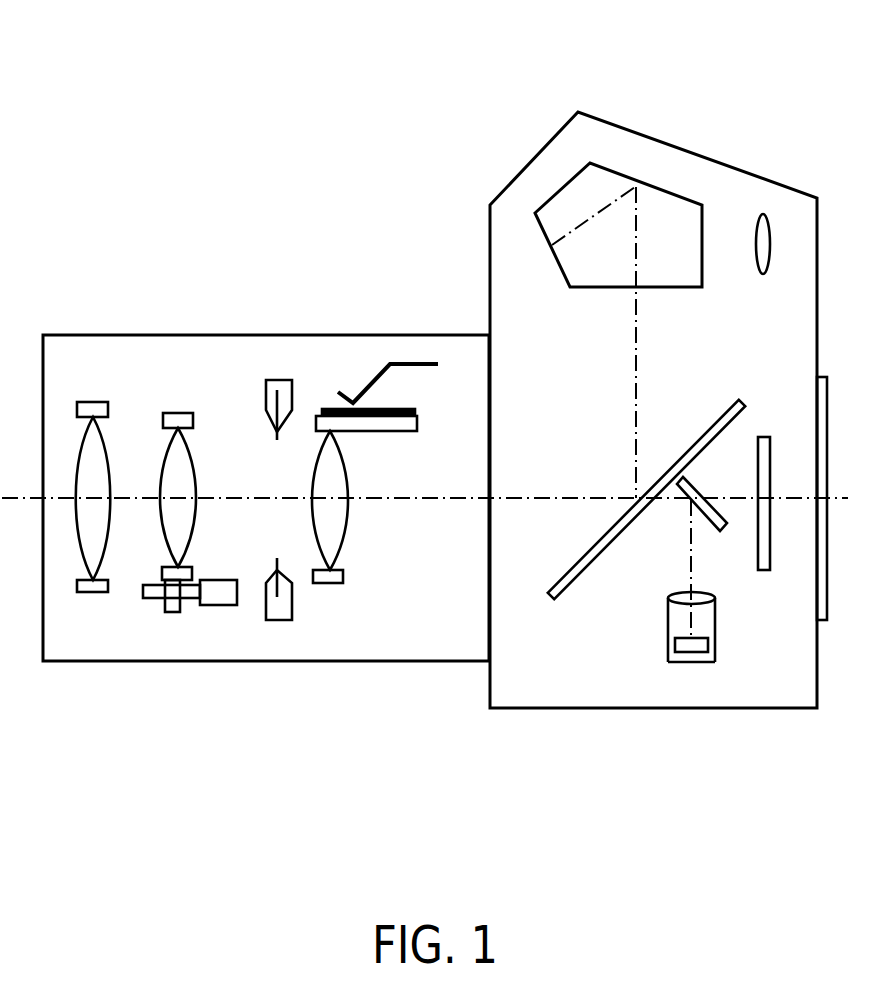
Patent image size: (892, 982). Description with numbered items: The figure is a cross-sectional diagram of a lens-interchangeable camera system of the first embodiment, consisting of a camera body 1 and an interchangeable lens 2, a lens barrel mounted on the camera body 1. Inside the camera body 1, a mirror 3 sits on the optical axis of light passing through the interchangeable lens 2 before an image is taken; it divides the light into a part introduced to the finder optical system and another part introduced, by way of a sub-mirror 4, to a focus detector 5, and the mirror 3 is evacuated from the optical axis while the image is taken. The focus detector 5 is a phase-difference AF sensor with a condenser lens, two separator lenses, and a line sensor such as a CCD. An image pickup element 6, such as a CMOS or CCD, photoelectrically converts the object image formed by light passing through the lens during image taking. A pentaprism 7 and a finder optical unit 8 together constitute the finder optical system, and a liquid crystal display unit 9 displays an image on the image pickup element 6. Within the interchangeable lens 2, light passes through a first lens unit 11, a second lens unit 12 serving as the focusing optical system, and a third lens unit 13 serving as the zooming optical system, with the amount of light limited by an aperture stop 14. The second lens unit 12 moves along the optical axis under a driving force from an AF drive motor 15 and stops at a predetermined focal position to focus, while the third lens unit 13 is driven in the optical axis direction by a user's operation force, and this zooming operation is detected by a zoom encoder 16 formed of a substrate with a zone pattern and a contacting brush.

The camera body 1 is at (523, 197).
The interchangeable lens 2 is at (191, 350).
The mirror 3 is at (573, 583).
The sub-mirror 4 is at (720, 535).
The focus detector 5 is at (680, 650).
The image pickup element 6 is at (772, 558).
The pentaprism 7 is at (600, 178).
The finder optical unit 8 is at (757, 218).
The liquid crystal display unit 9 is at (824, 375).
The first lens unit 11 is at (95, 553).
The second lens unit 12 is at (174, 540).
The third lens unit 13 is at (326, 545).
The aperture stop 14 is at (276, 390).
The AF drive motor 15 is at (218, 597).
The zoom encoder 16 is at (380, 378).